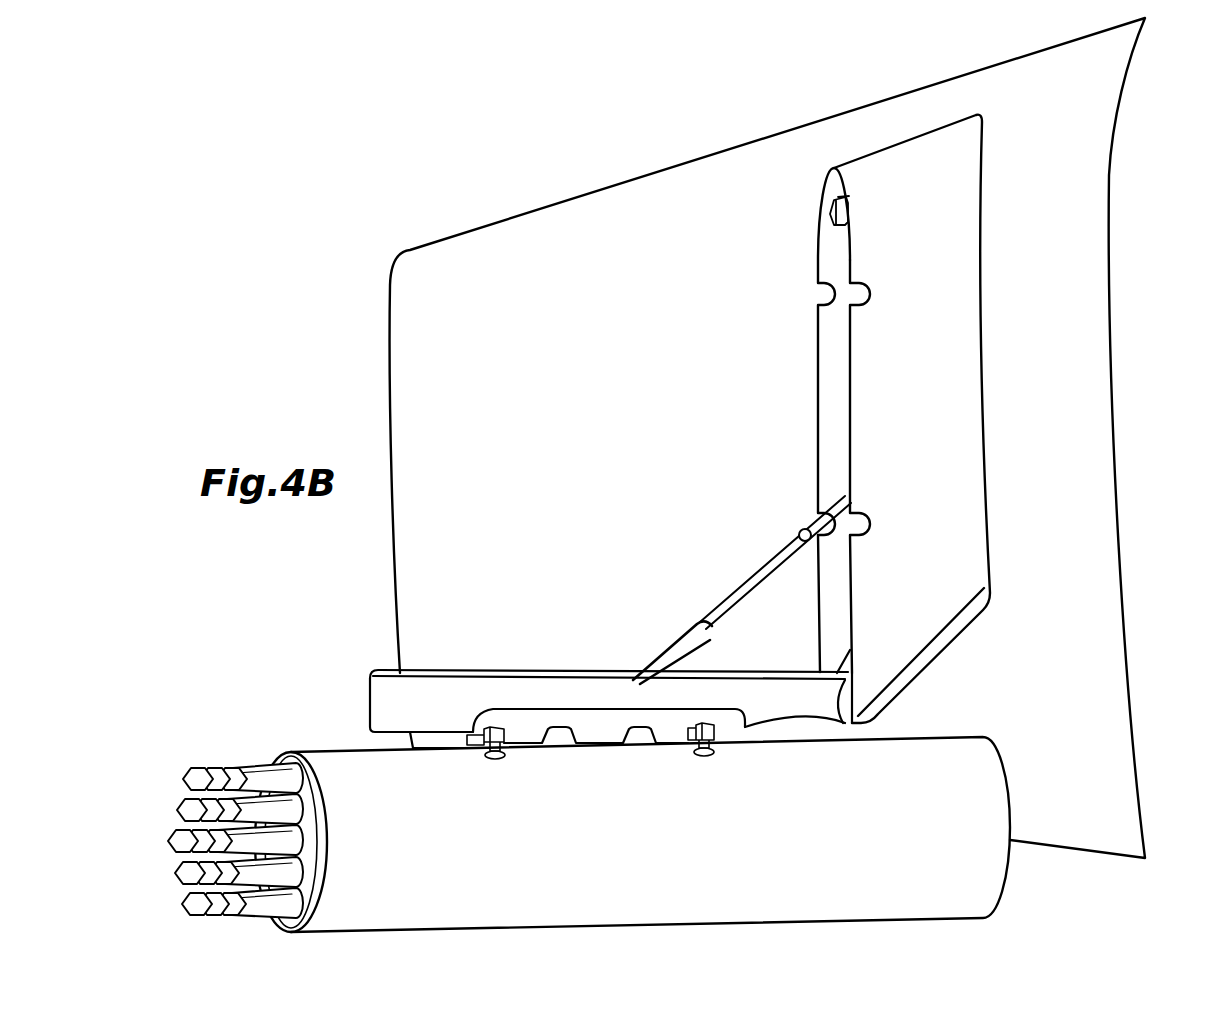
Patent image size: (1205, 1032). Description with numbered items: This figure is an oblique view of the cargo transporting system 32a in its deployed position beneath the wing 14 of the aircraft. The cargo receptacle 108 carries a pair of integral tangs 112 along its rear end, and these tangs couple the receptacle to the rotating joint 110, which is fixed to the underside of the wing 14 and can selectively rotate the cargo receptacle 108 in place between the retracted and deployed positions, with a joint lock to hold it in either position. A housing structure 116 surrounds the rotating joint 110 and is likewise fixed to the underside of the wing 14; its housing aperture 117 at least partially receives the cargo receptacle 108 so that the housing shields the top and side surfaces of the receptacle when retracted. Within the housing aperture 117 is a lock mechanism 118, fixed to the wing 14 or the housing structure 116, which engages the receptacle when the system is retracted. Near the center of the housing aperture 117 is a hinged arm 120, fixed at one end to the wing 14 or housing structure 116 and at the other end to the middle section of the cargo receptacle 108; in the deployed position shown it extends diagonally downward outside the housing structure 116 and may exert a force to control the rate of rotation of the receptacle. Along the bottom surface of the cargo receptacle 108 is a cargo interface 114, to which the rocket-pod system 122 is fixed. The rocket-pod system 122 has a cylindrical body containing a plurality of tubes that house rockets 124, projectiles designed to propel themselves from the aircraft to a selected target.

The wing 14 is at (1090, 153).
The cargo transporting system 32a is at (935, 584).
The cargo receptacle 108 is at (575, 685).
The rotating joint 110 is at (845, 723).
The integral tangs 112 is at (803, 714).
The cargo interface 114 is at (523, 717).
The housing structure 116 is at (962, 495).
The housing aperture 117 is at (838, 410).
The lock mechanism 118 is at (851, 215).
The hinged arm 120 is at (766, 560).
The rocket-pod system 122 is at (978, 901).
The rockets 124 is at (270, 768).